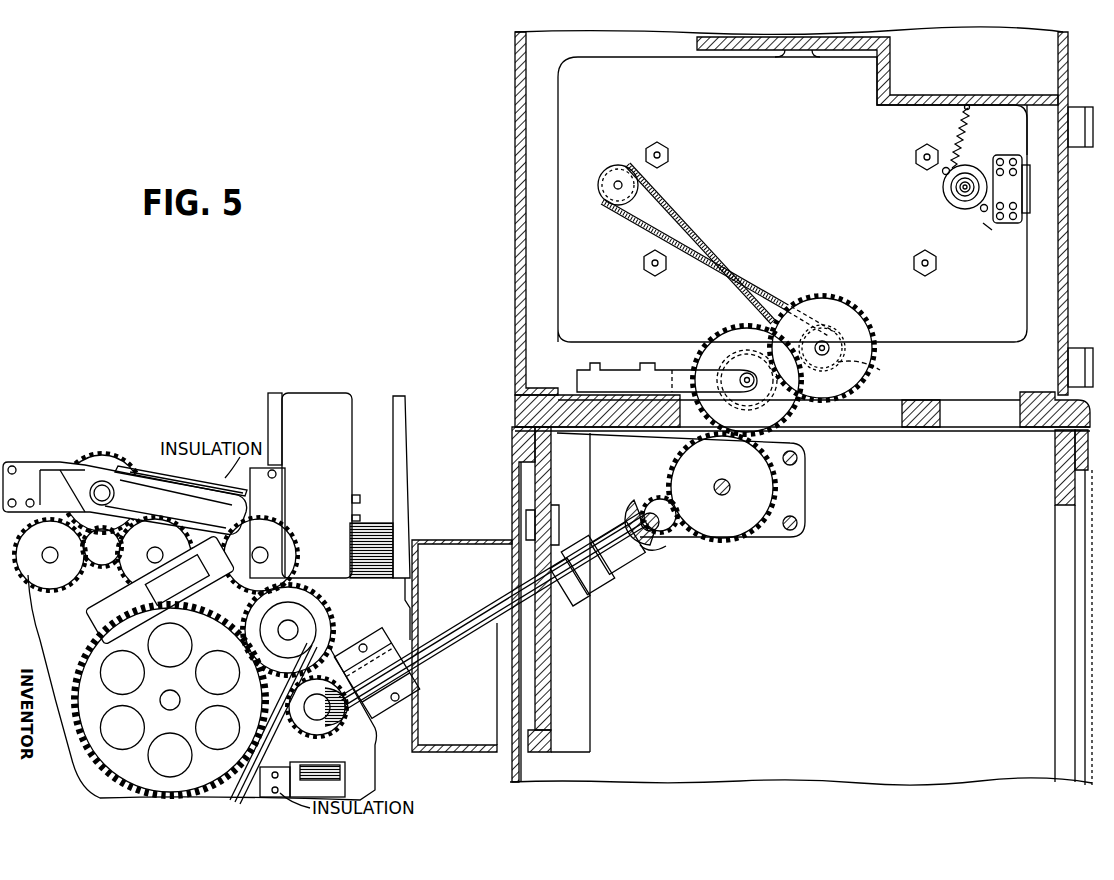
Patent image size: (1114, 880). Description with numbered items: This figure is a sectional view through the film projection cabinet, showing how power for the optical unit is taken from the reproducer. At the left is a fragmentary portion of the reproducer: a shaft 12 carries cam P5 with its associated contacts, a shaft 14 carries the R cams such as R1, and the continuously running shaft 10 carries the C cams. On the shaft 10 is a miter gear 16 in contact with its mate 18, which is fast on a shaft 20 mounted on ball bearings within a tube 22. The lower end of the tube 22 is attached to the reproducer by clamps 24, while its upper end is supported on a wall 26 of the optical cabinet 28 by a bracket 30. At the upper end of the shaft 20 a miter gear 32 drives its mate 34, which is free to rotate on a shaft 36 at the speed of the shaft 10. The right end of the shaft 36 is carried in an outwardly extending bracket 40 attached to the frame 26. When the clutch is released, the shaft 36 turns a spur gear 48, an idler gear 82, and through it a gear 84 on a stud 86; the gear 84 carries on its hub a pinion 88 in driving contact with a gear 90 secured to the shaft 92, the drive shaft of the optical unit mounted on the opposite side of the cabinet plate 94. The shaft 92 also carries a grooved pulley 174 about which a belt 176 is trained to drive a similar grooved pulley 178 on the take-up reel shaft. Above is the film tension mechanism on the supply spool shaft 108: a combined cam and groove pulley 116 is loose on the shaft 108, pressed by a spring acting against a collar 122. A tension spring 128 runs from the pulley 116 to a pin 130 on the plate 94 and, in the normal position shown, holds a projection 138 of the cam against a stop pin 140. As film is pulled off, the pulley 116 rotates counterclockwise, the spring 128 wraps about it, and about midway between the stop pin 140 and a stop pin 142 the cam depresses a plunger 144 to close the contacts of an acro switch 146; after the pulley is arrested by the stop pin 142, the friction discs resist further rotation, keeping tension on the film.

The optical cabinet 28 is at (515, 305).
The cabinet plate 94 is at (957, 336).
The grooved pulley 178 is at (614, 170).
The belt 176 is at (700, 240).
The gear 90 is at (836, 298).
The shaft 92 is at (830, 345).
The grooved pulley 174 is at (880, 370).
The gear 84 is at (722, 338).
The pinion 88 is at (732, 414).
The stud 86 is at (755, 386).
The cam and groove pulley 116 is at (950, 195).
The collar 122 is at (955, 185).
The supply spool shaft 108 is at (962, 192).
The projection 138 is at (945, 178).
The stop pin 140 is at (946, 166).
The tension spring 128 is at (968, 138).
The pin 130 is at (972, 110).
The stop pin 142 is at (985, 215).
The acro switch 146 is at (1012, 188).
The plunger 144 is at (992, 225).
The bracket 40 is at (797, 490).
The idler gear 82 is at (760, 480).
The spur gear 48 is at (658, 497).
The miter gear 34 is at (642, 498).
The shaft 36 is at (675, 535).
The miter gear 32 is at (636, 553).
The shaft 20 is at (602, 572).
The bracket 30 is at (592, 582).
The tube 22 is at (452, 658).
The miter gear 18 is at (358, 700).
The clamps 24 is at (400, 700).
The wall 26 is at (552, 640).
The cam P5 is at (112, 458).
The shaft 12 is at (100, 480).
The shaft 14 is at (318, 606).
The R cam R1 is at (295, 630).
The shaft 10 is at (335, 725).
The miter gear 16 is at (330, 735).